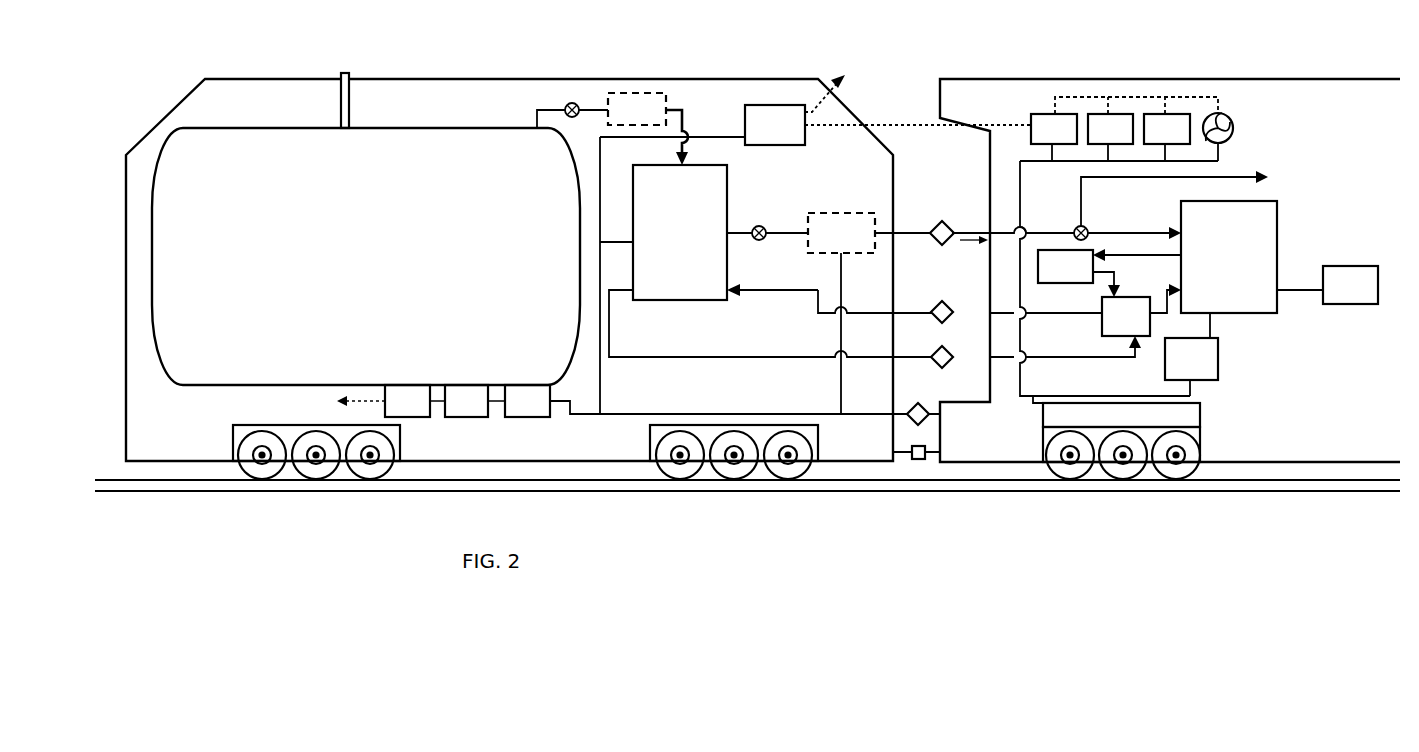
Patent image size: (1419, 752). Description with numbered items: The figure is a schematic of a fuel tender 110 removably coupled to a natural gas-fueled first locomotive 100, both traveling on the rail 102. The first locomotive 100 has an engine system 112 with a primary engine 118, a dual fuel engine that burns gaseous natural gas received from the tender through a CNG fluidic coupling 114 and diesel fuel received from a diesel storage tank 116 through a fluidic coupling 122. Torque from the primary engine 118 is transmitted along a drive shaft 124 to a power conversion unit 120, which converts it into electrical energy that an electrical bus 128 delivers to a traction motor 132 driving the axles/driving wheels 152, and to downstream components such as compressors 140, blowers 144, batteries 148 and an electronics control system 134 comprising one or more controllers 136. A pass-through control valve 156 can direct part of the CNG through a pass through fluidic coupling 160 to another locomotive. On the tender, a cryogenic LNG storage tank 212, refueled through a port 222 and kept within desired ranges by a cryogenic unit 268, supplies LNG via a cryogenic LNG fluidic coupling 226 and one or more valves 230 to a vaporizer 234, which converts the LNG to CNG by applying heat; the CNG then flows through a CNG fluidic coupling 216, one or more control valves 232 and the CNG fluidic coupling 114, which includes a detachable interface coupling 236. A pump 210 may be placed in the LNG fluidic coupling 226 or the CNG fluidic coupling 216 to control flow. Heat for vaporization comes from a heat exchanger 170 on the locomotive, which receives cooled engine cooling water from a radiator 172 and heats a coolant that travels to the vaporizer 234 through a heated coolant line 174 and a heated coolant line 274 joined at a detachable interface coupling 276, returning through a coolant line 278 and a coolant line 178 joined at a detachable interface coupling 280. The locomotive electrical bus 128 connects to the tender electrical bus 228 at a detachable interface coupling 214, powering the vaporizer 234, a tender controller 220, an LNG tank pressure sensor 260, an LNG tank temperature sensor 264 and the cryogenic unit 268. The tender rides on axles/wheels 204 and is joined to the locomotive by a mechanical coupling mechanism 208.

The first locomotive 100 is at (1100, 79).
The rail 102 is at (945, 487).
The fuel tender 110 is at (248, 79).
The engine system 112 is at (1262, 370).
The CNG fluidic coupling 114 is at (985, 228).
The diesel storage tank 116 is at (1350, 285).
The primary engine 118 is at (1229, 257).
The power conversion unit 120 is at (1191, 367).
The fluidic coupling 122 is at (1300, 297).
The drive shaft 124 is at (1210, 318).
The electrical bus 128 is at (1037, 400).
The traction motor 132 is at (1116, 411).
The electronics control system 134 is at (1010, 118).
The controller 136 is at (1054, 137).
The compressor 140 is at (1110, 137).
The blower 144 is at (1237, 128).
The battery 148 is at (1167, 137).
The axles/driving wheels 152 is at (1122, 478).
The pass-through control valve 156 is at (1078, 228).
The pass through fluidic coupling 160 is at (1245, 172).
The heat exchanger 170 is at (1141, 310).
The radiator 172 is at (1109, 273).
The heated coolant line 174 is at (1040, 315).
The coolant line 178 is at (1095, 360).
The axles/wheels 204 is at (776, 472).
The mechanical coupling mechanism 208 is at (918, 478).
The pump 210 is at (741, 173).
The cryogenic LNG storage tank 212 is at (366, 256).
The detachable interface coupling 214 is at (916, 425).
The CNG fluidic coupling 216 is at (790, 228).
The tender controller 220 is at (888, 98).
The port 222 is at (349, 120).
The cryogenic LNG fluidic coupling 226 is at (548, 110).
The electrical bus 228 is at (730, 412).
The valve 230 is at (578, 105).
The control valve 232 is at (766, 240).
The vaporizer 234 is at (663, 232).
The detachable interface coupling 236 is at (942, 247).
The LNG tank pressure sensor 260 is at (467, 401).
The LNG tank temperature sensor 264 is at (552, 401).
The cryogenic unit 268 is at (352, 401).
The heated coolant line 274 is at (812, 305).
The detachable interface coupling 276 is at (931, 306).
The coolant line 278 is at (790, 358).
The detachable interface coupling 280 is at (935, 365).